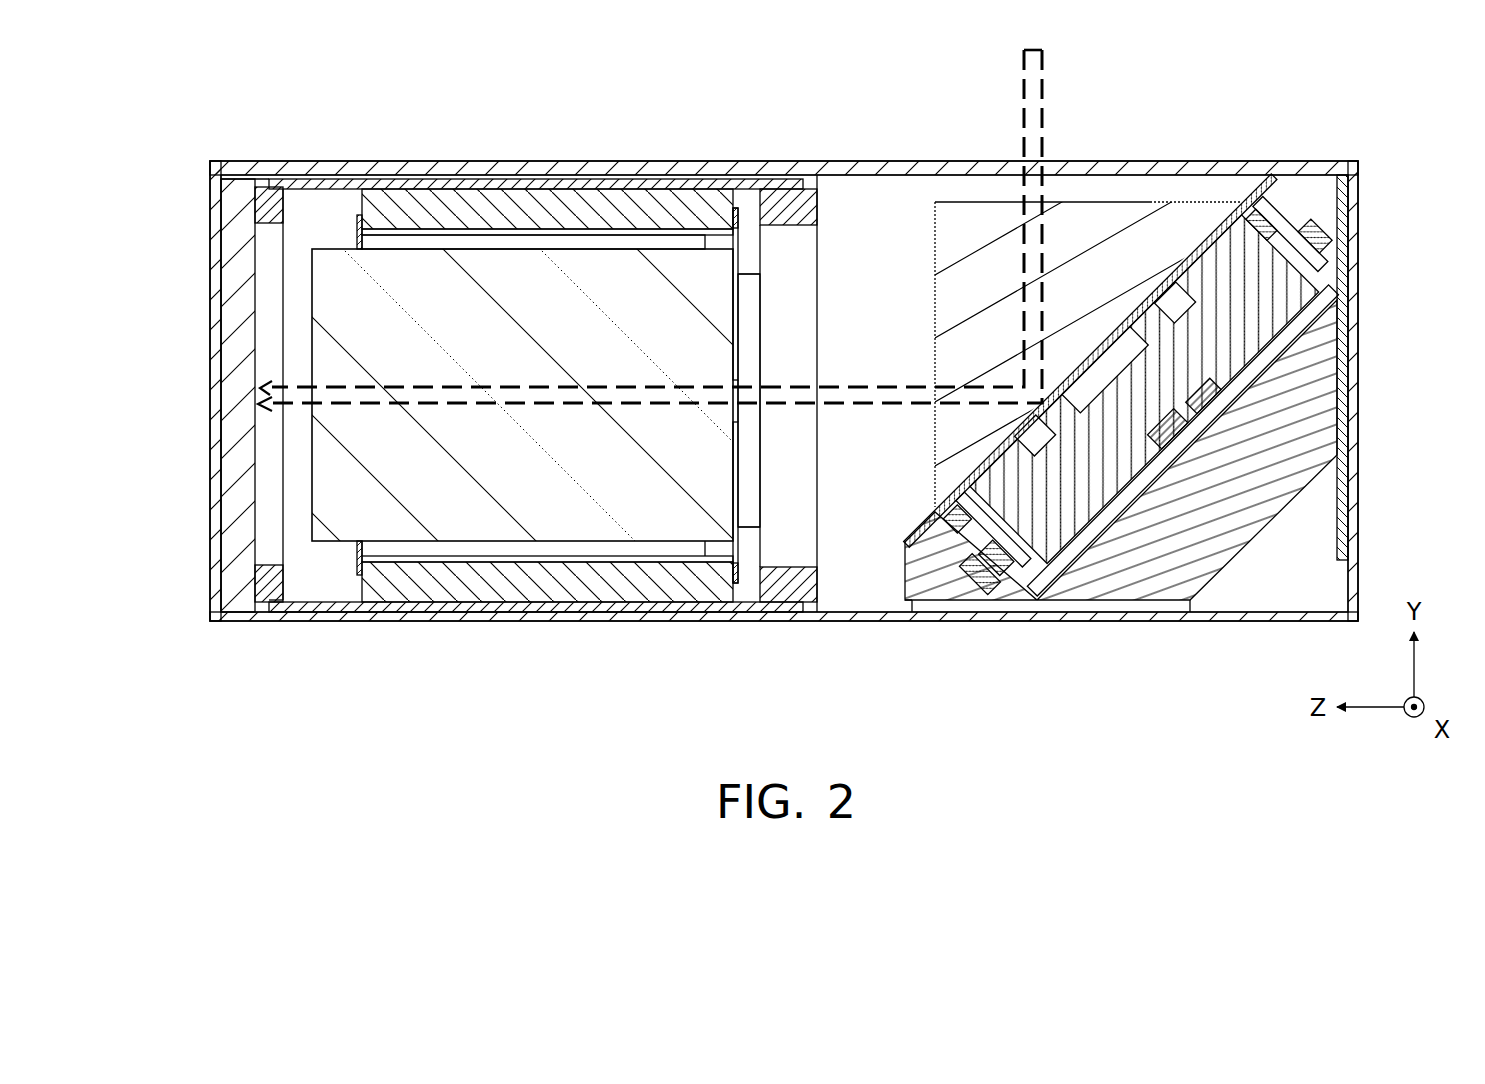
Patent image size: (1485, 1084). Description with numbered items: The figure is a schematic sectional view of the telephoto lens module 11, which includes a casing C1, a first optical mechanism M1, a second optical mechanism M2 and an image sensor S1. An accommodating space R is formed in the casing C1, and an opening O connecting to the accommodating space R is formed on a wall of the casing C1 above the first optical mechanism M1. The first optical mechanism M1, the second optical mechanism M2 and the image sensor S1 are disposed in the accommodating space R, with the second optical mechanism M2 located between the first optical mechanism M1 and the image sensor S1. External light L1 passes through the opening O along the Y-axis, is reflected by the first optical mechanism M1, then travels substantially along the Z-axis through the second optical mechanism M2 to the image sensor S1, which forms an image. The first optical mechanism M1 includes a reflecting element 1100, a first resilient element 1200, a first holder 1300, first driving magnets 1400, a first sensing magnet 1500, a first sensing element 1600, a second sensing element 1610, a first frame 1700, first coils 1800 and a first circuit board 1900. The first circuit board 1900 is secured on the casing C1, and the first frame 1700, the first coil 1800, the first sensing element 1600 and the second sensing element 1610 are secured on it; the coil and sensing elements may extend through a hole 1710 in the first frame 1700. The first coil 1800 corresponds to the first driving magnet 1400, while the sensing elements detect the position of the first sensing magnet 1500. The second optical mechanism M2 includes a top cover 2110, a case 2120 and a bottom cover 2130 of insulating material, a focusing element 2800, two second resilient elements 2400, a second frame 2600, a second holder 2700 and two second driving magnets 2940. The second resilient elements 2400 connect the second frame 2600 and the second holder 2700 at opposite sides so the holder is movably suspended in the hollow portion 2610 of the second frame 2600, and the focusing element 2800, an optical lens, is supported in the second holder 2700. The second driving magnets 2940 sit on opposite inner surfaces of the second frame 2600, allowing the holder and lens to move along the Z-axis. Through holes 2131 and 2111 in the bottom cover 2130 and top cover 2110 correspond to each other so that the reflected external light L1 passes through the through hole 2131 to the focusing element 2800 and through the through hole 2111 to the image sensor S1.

The telephoto lens module 11 is at (113, 83).
The reflecting element 1100 is at (985, 255).
The first resilient element 1200 is at (975, 588).
The first holder 1300 is at (1265, 325).
The first driving magnets 1400 is at (1322, 225).
The first sensing magnet 1500 is at (1242, 372).
The first sensing element 1600 is at (1045, 605).
The second sensing element 1610 is at (1182, 605).
The first frame 1700 is at (1298, 180).
The hole 1710 is at (1332, 222).
The first coils 1800 is at (1270, 178).
The first circuit board 1900 is at (1345, 485).
The top cover 2110 is at (248, 215).
The through hole 2111 is at (268, 268).
The case 2120 is at (565, 605).
The bottom cover 2130 is at (815, 190).
The through hole 2131 is at (805, 545).
The second resilient elements 2400 is at (358, 578).
The second frame 2600 is at (475, 200).
The hollow portion 2610 is at (455, 565).
The second holder 2700 is at (565, 240).
The focusing element 2800 is at (655, 280).
The second driving magnets 2940 is at (745, 278).
The second optical mechanism M2 is at (311, 176).
The first optical mechanism M1 is at (1250, 188).
The accommodating space R is at (900, 205).
The opening O is at (1160, 170).
The external light L1 is at (1052, 82).
The image sensor S1 is at (232, 398).
The casing C1 is at (1338, 262).